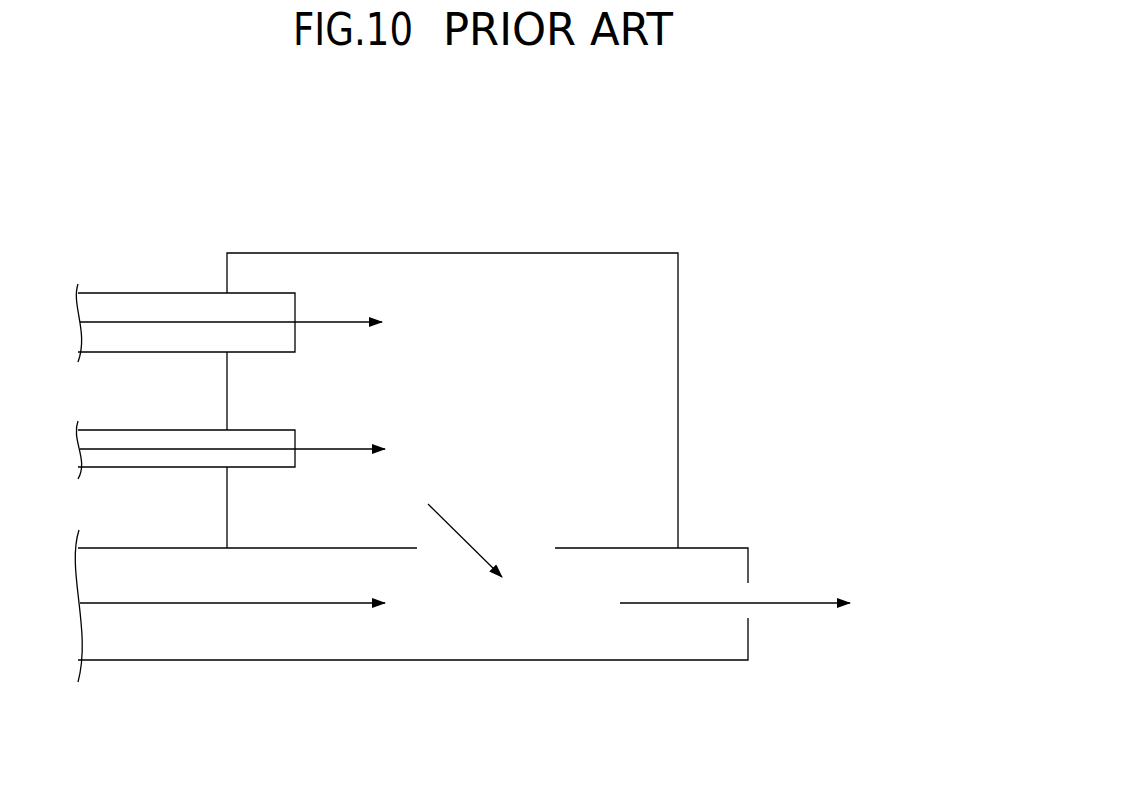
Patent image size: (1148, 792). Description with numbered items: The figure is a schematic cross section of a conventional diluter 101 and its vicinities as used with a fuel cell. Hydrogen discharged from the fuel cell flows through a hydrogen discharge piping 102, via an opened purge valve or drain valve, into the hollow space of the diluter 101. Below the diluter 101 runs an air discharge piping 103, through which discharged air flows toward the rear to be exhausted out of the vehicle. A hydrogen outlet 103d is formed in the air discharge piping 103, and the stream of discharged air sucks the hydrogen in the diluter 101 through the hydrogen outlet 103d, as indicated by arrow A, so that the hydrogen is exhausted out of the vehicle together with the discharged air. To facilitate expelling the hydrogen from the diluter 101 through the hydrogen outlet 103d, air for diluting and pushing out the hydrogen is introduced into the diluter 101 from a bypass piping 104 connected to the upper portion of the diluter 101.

The diluter 101 is at (518, 253).
The hydrogen discharge piping 102 is at (113, 429).
The air discharge piping 103 is at (188, 660).
The hydrogen outlet 103d is at (517, 555).
The bypass piping 104 is at (113, 293).
The arrow A is at (450, 538).